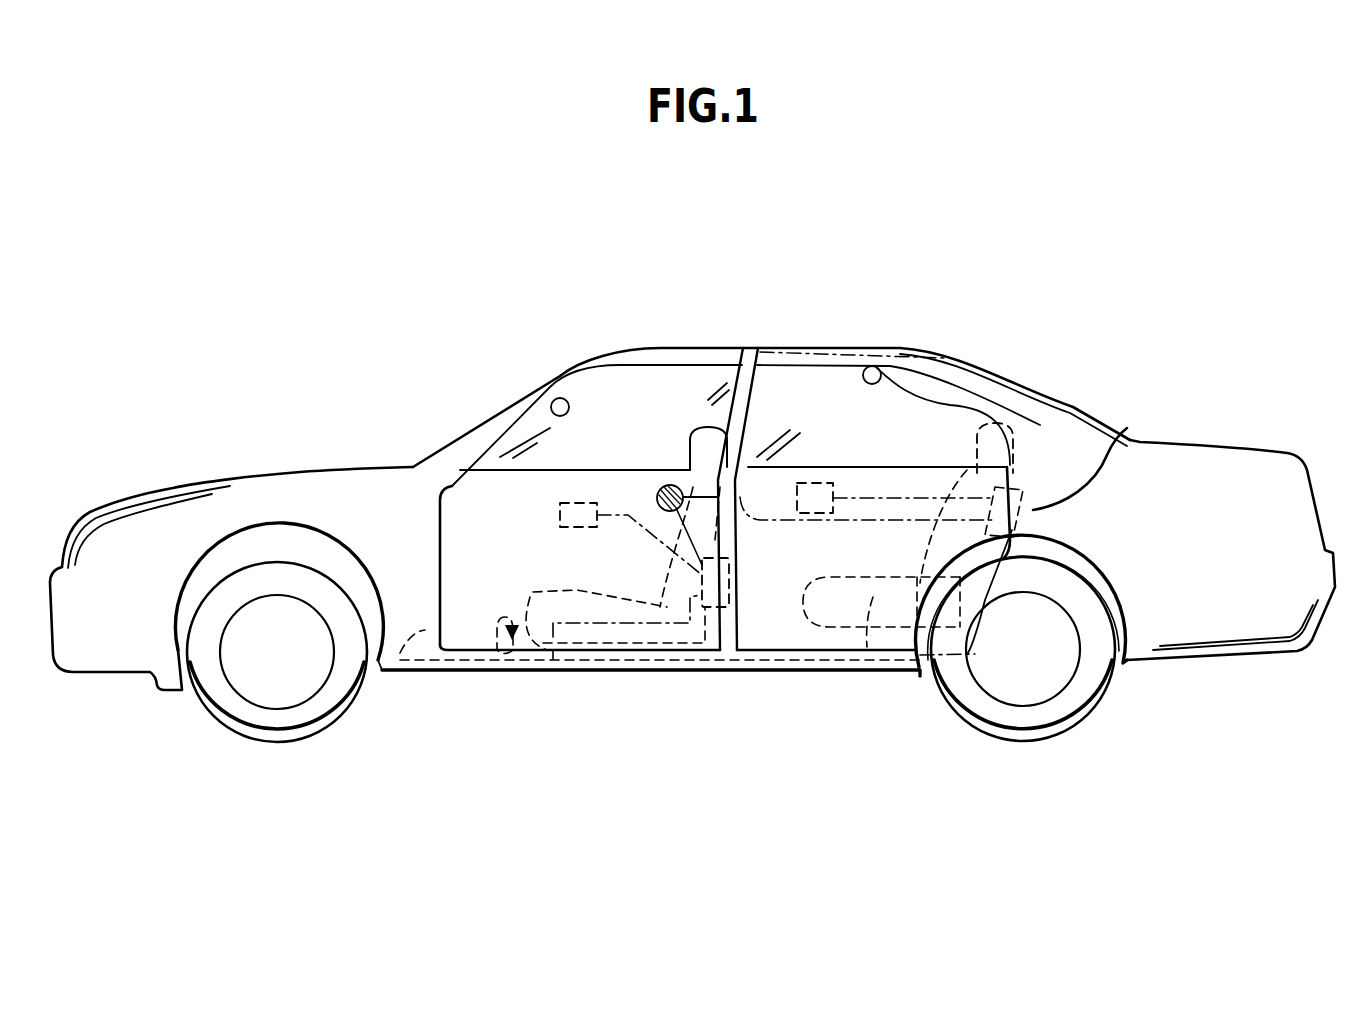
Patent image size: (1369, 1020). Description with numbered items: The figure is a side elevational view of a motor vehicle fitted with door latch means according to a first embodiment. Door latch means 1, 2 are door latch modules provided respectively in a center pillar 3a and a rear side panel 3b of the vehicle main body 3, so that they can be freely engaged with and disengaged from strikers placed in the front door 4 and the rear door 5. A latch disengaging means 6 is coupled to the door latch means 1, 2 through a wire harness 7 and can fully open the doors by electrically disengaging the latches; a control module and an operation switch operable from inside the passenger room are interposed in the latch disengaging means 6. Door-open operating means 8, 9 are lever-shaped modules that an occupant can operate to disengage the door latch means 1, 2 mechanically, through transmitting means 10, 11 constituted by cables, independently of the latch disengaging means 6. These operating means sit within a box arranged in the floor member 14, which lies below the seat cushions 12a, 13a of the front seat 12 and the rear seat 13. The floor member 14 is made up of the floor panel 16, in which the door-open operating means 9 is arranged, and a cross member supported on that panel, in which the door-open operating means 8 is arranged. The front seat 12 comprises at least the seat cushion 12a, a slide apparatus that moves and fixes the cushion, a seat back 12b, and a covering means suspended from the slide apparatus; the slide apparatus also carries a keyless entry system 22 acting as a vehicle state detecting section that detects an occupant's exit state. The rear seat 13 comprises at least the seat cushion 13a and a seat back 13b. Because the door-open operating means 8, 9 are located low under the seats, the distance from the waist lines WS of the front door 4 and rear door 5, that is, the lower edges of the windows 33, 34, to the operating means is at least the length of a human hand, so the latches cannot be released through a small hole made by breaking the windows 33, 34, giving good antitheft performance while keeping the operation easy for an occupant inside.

The door latch means 1 is at (724, 608).
The door latch means 2 is at (1024, 531).
The vehicle main body 3 is at (1050, 388).
The center pillar 3a is at (752, 348).
The rear side panel 3b is at (1123, 430).
The front door 4 is at (457, 597).
The rear door 5 is at (770, 672).
The latch disengaging means 6 is at (578, 503).
The wire harness 7 is at (630, 515).
The door-open operating means 8 is at (558, 672).
The door-open operating means 9 is at (810, 633).
The transmitting means 10 is at (645, 672).
The transmitting means 11 is at (920, 687).
The front seat 12 is at (531, 594).
The seat cushion 12a is at (575, 590).
The seat back 12b is at (698, 425).
The rear seat 13 is at (913, 542).
The seat cushion 13a is at (873, 652).
The seat back 13b is at (1073, 415).
The floor member 14 is at (512, 672).
The floor panel 16 is at (460, 678).
The keyless entry system 22 is at (663, 486).
The window 33 is at (553, 400).
The window 34 is at (886, 362).
The waist line WS is at (490, 468).